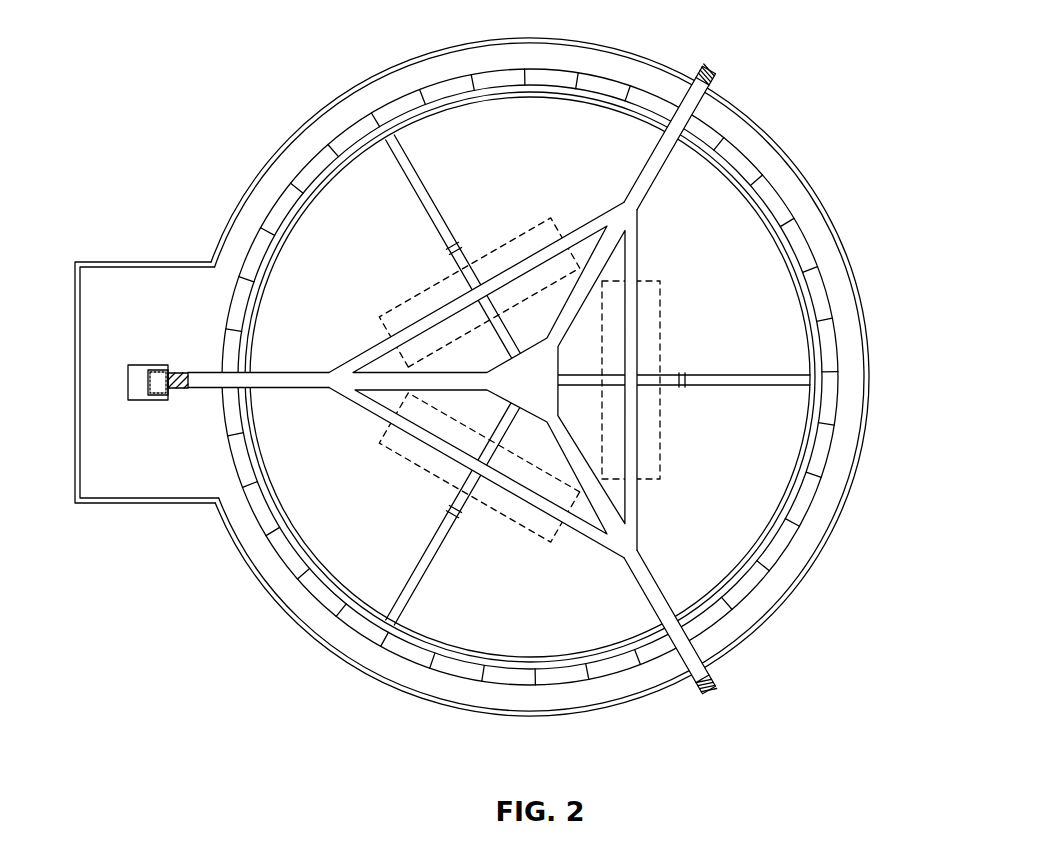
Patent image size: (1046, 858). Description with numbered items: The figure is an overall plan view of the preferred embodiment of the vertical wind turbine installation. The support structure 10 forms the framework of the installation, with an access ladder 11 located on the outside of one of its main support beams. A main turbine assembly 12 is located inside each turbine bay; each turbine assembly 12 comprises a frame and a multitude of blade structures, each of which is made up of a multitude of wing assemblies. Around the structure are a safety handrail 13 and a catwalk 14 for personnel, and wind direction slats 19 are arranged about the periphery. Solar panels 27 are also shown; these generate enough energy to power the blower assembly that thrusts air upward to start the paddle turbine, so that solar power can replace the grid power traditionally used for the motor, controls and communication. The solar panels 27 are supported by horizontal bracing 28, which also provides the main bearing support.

The support structure 10 is at (706, 60).
The access ladder 11 is at (128, 383).
The main turbine assembly 12 is at (783, 598).
The safety handrail 13 is at (833, 537).
The catwalk 14 is at (238, 520).
The wind direction slats 19 is at (823, 462).
The solar panels 27 is at (517, 520).
The horizontal bracing 28 is at (630, 223).